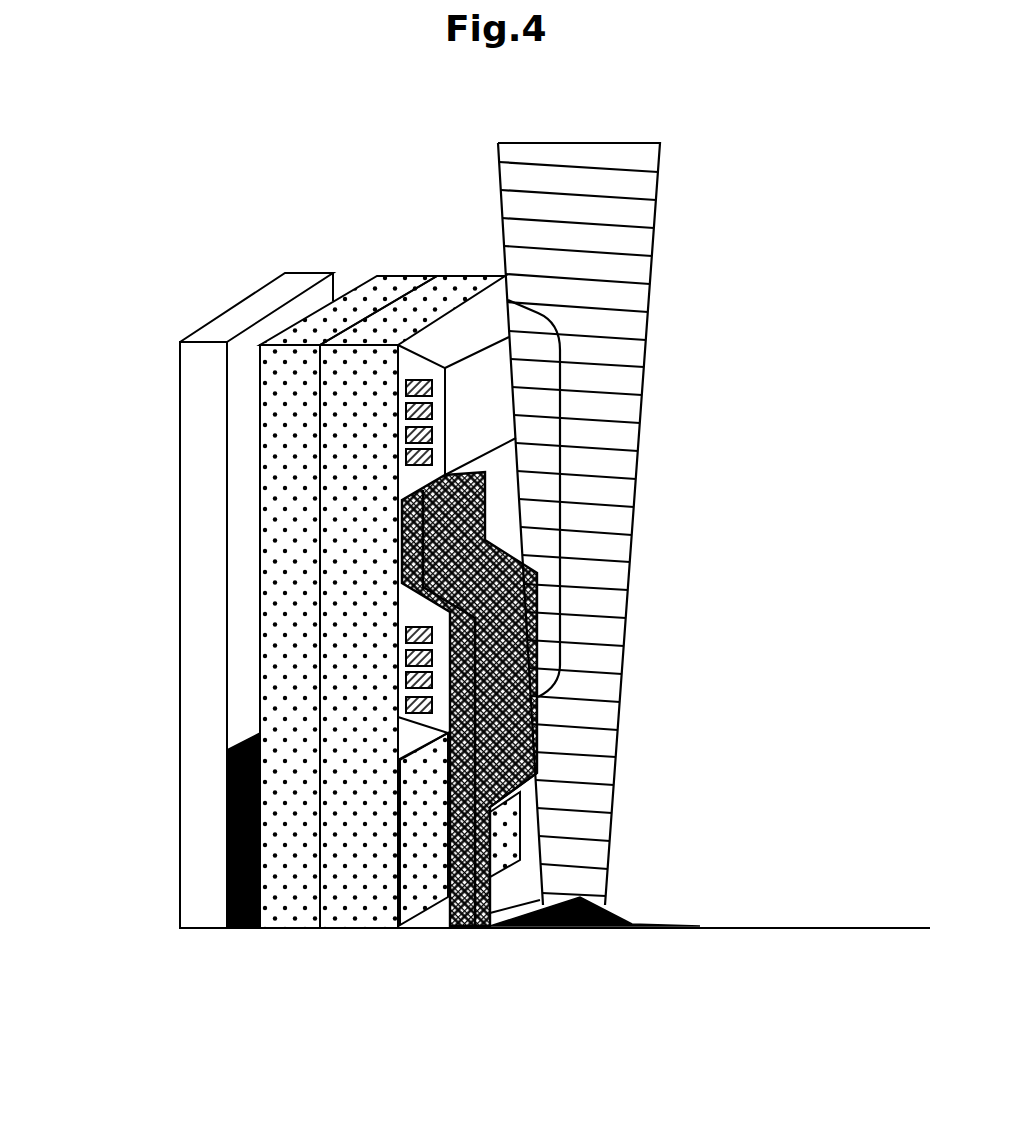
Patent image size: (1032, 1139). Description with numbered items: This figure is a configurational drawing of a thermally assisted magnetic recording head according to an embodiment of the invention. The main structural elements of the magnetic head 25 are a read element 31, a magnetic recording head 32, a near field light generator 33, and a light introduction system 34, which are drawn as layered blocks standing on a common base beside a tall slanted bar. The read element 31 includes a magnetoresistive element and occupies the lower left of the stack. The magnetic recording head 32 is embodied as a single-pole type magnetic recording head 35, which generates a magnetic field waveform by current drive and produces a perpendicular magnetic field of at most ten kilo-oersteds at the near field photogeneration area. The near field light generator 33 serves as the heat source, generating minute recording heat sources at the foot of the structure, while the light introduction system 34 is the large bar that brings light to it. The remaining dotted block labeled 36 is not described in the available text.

The magnetic head 25 is at (184, 242).
The read element 31 is at (223, 863).
The magnetic recording head 32 is at (438, 928).
The near field light generator 33 is at (560, 928).
The light introduction system 34 is at (605, 647).
The single-pole type magnetic recording head 35 is at (452, 735).
The substrate block 36 is at (398, 394).